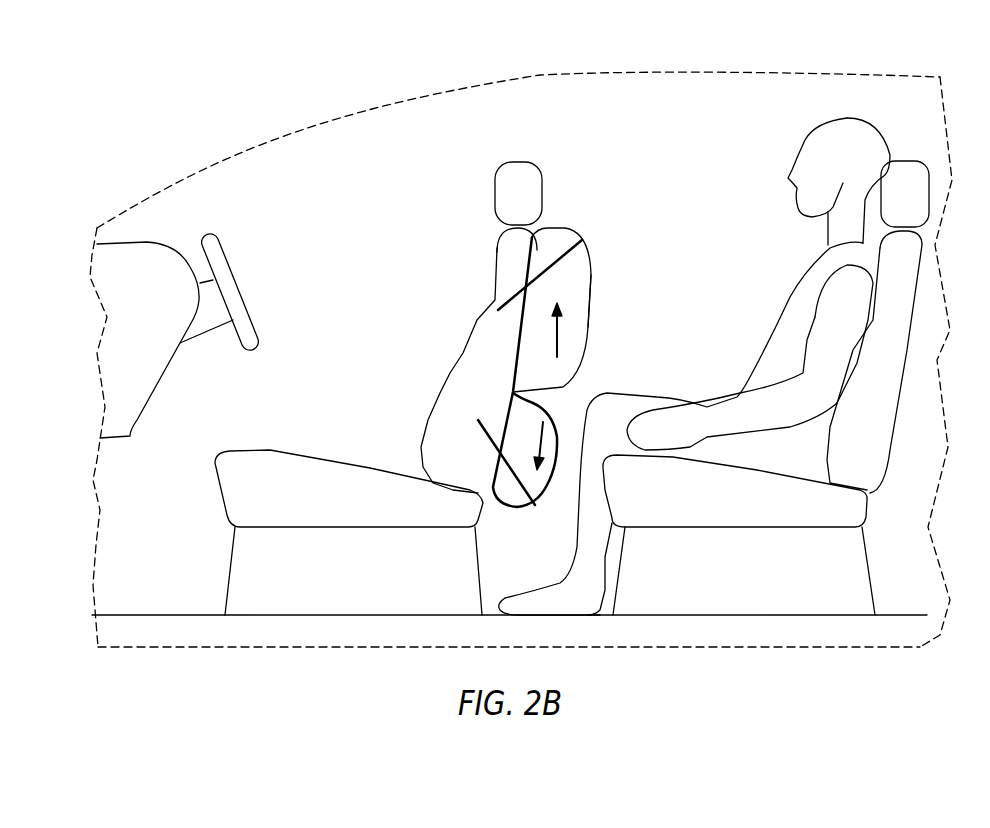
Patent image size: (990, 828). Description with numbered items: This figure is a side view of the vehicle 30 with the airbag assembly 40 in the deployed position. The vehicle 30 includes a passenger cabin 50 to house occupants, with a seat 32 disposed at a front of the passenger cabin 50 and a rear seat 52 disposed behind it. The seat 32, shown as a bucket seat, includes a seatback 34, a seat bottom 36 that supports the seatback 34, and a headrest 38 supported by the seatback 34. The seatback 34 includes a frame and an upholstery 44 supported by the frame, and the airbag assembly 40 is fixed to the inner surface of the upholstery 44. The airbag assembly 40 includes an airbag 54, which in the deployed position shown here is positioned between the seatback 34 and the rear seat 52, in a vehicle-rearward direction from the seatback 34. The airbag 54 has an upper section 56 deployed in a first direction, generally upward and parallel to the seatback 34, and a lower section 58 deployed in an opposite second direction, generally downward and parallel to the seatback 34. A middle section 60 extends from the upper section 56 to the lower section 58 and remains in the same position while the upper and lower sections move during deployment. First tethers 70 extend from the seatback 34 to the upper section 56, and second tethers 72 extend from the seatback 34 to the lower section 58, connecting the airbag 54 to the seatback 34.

The vehicle 30 is at (258, 97).
The seat 32 is at (341, 384).
The seatback 34 is at (447, 388).
The seat bottom 36 is at (268, 451).
The headrest 38 is at (495, 187).
The airbag assembly 40 is at (520, 365).
The upholstery 44 is at (497, 250).
The passenger cabin 50 is at (503, 80).
The rear seat 52 is at (917, 297).
The airbag 54 is at (590, 255).
The upper section 56 is at (592, 283).
The lower section 58 is at (560, 400).
The middle section 60 is at (513, 392).
The first tethers 70 is at (513, 297).
The second tethers 72 is at (497, 455).